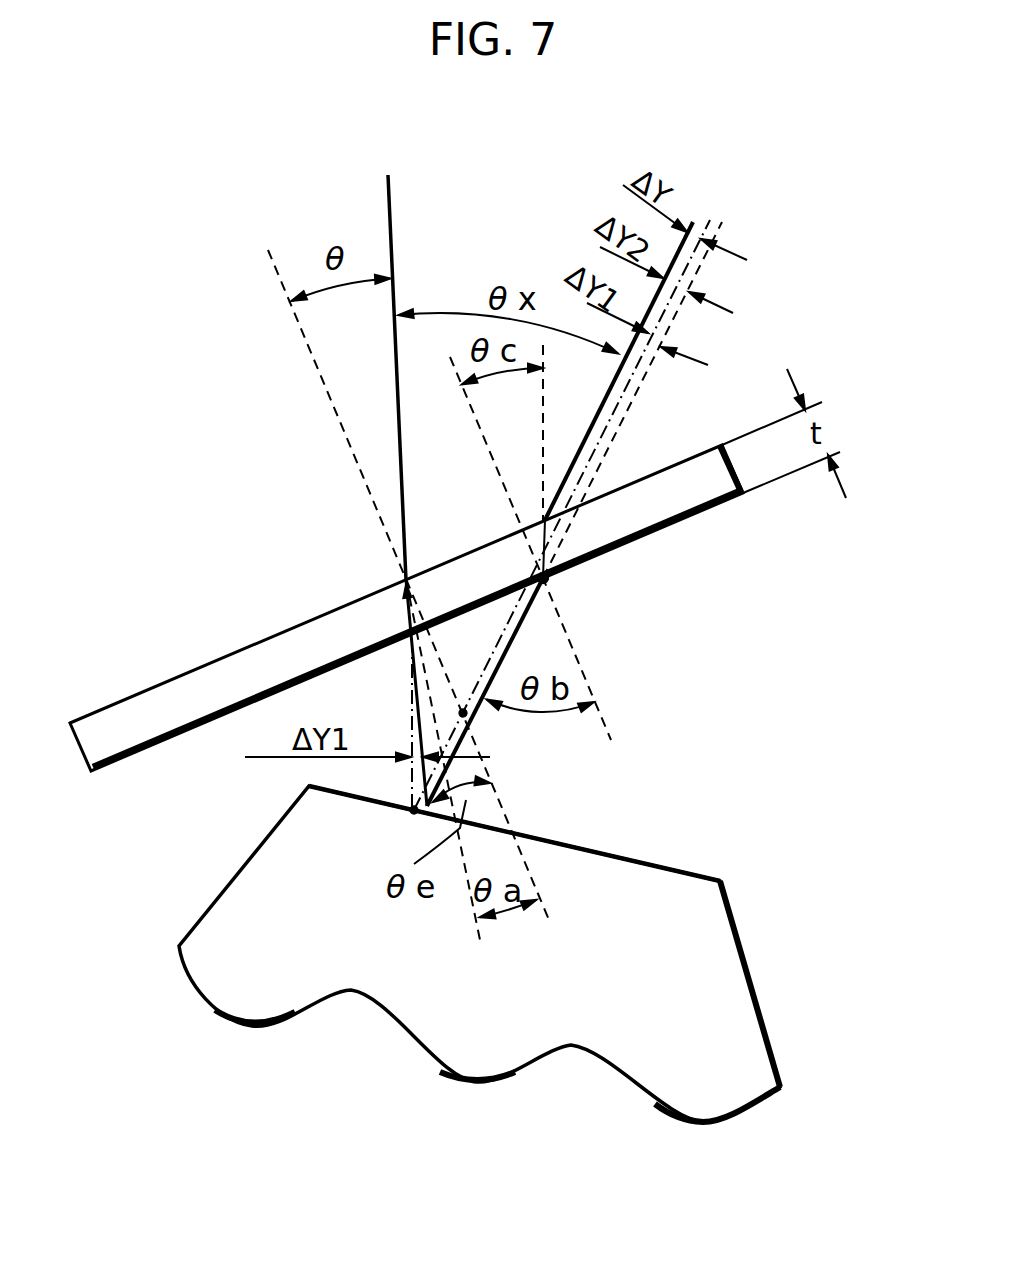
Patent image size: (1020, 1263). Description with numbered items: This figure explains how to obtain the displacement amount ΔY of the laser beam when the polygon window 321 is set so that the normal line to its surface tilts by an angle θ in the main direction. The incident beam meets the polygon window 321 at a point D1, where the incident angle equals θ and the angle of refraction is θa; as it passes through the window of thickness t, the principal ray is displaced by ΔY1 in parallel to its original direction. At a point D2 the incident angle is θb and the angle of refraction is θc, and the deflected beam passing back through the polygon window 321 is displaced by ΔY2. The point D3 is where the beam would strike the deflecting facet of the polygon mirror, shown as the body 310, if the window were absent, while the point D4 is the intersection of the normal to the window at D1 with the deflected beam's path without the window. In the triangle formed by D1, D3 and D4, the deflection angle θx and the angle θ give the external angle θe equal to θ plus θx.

The polygon window 321 is at (187, 688).
The object surface / substrate 310 is at (733, 909).
The point D1 is at (403, 579).
The point D2 is at (548, 582).
The point D3 is at (413, 811).
The point D4 is at (465, 714).